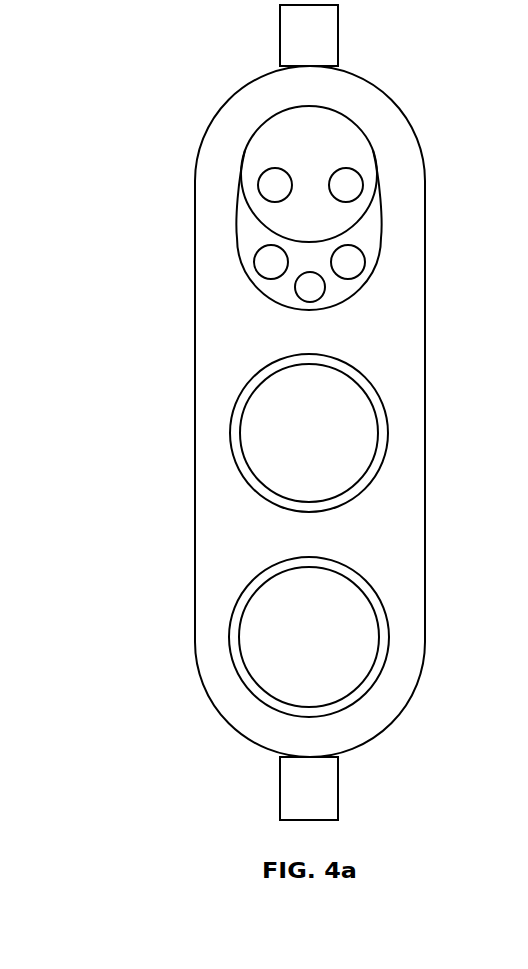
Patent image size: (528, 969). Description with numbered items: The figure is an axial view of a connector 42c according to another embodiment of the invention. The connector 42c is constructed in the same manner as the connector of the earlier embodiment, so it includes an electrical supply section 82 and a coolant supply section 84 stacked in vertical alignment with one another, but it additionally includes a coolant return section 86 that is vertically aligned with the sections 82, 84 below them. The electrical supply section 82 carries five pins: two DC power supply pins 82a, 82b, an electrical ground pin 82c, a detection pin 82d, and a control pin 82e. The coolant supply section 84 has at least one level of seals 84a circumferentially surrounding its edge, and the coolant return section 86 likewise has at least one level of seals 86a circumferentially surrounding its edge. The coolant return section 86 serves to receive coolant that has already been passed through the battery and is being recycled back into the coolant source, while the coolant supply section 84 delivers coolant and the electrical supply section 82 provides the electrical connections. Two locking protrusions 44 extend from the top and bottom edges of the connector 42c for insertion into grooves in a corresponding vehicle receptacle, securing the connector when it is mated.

The connector 42c is at (425, 325).
The locking protrusions 44 is at (340, 45).
The electrical supply section 82 is at (377, 152).
The DC power supply pin 82a is at (254, 262).
The DC power supply pin 82b is at (366, 262).
The electrical ground pin 82c is at (310, 302).
The detection pin 82d is at (346, 170).
The control pin 82e is at (259, 192).
The coolant supply section 84 is at (355, 428).
The seals 84a is at (233, 427).
The coolant return section 86 is at (362, 637).
The seals 86a is at (238, 613).